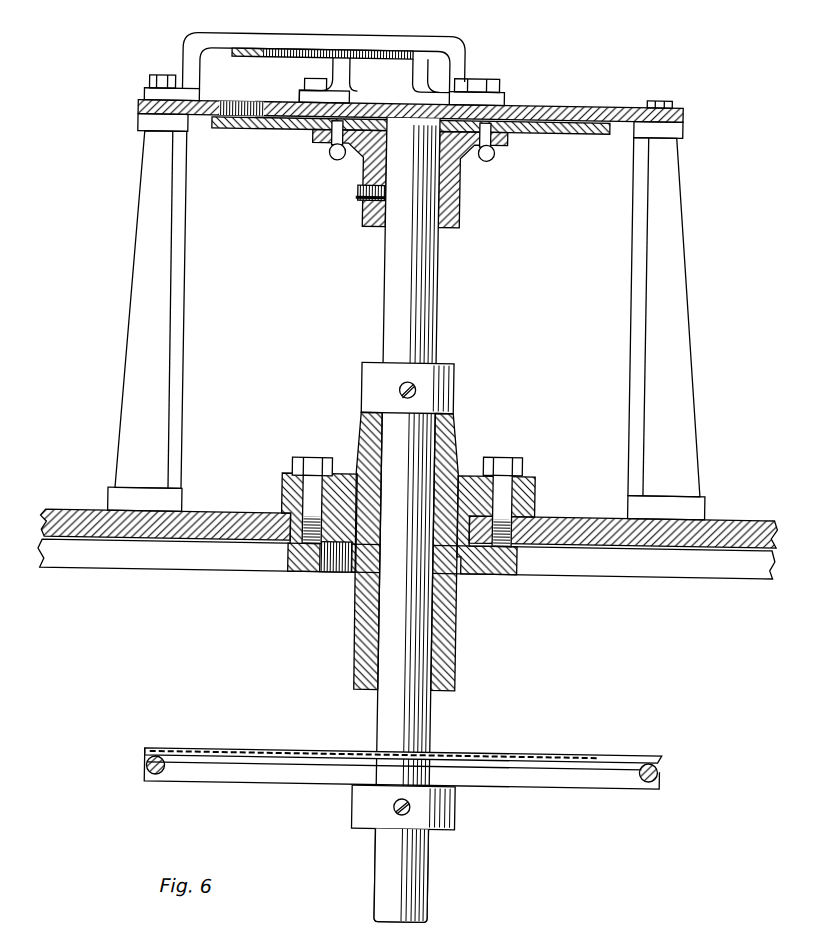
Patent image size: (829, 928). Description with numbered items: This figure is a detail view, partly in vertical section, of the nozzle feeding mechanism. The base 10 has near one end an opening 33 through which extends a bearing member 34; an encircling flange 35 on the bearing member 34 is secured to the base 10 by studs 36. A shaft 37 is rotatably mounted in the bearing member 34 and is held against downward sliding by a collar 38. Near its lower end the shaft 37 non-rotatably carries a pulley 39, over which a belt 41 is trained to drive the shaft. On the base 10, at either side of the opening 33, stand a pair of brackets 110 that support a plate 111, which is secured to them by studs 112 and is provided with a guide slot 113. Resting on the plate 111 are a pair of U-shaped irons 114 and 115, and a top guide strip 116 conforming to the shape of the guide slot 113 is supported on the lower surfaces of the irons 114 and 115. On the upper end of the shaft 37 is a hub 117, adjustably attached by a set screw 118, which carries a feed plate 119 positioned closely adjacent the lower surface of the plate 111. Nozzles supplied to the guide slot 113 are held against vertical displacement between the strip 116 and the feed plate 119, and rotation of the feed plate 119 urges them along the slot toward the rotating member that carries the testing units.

The base 10 is at (661, 581).
The opening 33 is at (344, 577).
The bearing member 34 is at (466, 647).
The encircling flange 35 is at (543, 490).
The studs 36 is at (316, 462).
The shaft 37 is at (432, 318).
The collar 38 is at (369, 386).
The pulley 39 is at (555, 756).
The belt 41 is at (671, 769).
The brackets 110 is at (179, 358).
The plate 111 is at (560, 111).
The studs 112 is at (664, 95).
The guide slot 113 is at (267, 93).
The U-shaped iron 114 is at (460, 47).
The U-shaped iron 115 is at (282, 40).
The top guide strip 116 is at (329, 51).
The hub 117 is at (463, 195).
The set screw 118 is at (359, 199).
The feed plate 119 is at (571, 131).